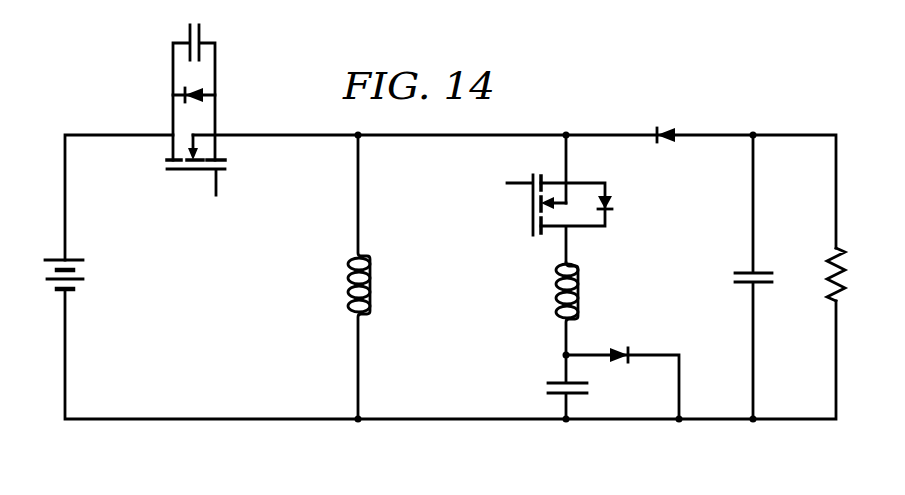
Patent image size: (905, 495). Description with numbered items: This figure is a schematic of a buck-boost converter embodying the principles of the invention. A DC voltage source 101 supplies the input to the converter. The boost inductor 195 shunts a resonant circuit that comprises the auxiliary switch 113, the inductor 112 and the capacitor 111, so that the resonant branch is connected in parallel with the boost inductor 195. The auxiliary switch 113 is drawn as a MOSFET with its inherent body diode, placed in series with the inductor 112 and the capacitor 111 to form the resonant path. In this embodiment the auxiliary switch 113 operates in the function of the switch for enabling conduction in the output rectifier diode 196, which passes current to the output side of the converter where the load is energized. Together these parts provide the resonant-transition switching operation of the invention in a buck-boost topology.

The DC voltage source 101 is at (65, 279).
The boost inductor 195 is at (338, 277).
The auxiliary switch 113 is at (577, 199).
The inductor 112 is at (584, 309).
The capacitor 111 is at (552, 387).
The output rectifier diode 196 is at (669, 118).